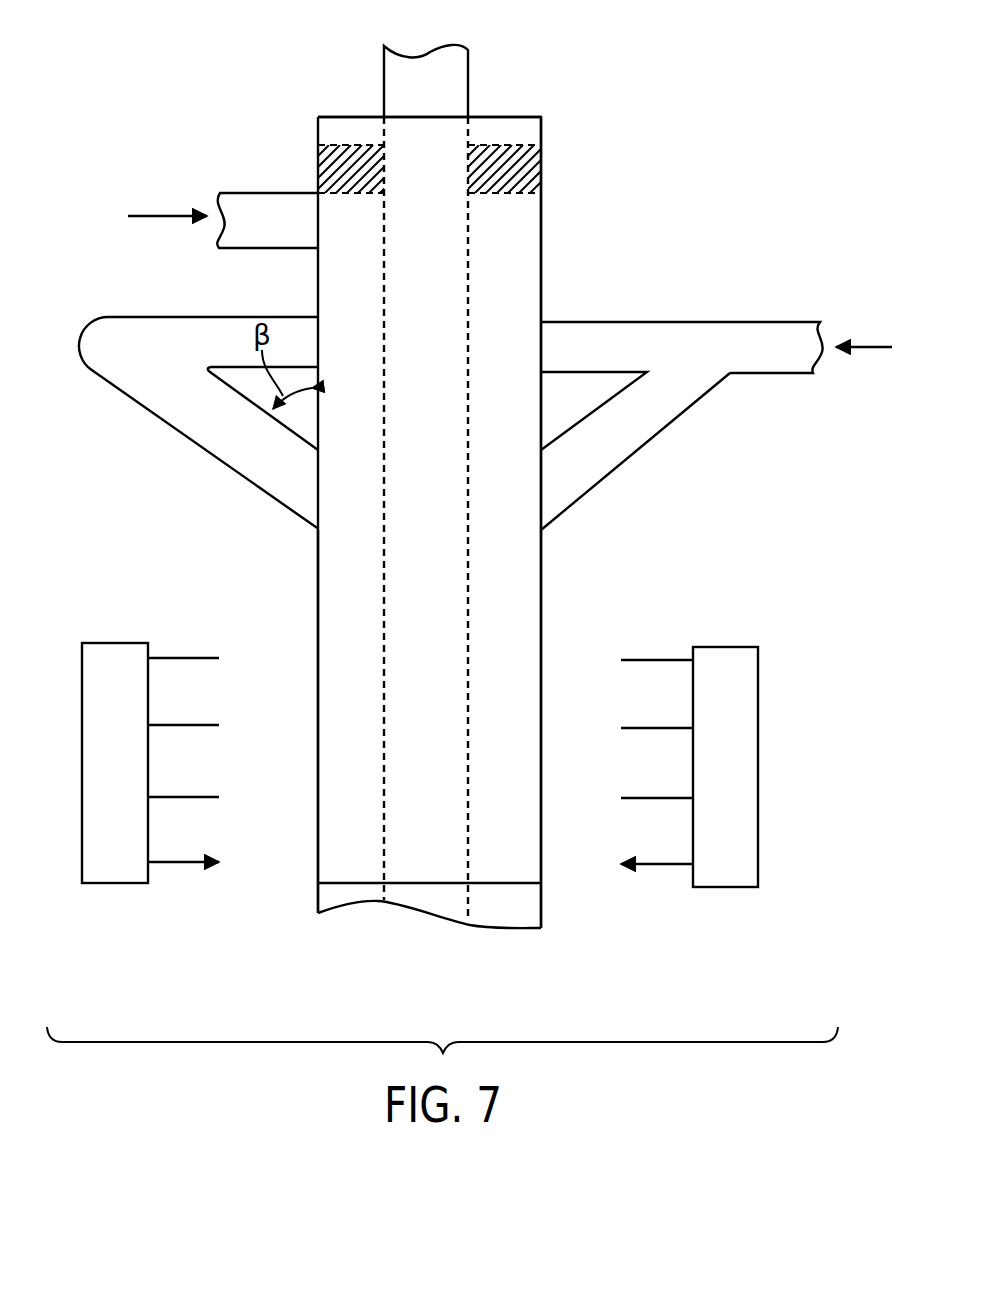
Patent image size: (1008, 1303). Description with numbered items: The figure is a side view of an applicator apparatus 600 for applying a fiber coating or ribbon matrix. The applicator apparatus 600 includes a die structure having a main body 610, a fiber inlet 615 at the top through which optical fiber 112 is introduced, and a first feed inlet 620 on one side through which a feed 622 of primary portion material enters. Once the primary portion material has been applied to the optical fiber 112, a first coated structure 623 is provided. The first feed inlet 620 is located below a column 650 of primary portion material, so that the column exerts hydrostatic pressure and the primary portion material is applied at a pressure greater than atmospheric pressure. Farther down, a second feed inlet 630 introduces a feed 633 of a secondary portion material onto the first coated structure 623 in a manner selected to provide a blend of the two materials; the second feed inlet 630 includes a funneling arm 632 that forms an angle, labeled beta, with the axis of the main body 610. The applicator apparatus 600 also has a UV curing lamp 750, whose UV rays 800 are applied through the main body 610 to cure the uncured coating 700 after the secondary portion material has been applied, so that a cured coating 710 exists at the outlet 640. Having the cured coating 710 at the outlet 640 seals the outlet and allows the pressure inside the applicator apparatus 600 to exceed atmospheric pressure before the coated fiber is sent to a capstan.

The optical fiber 112 is at (470, 60).
The applicator apparatus 600 is at (552, 957).
The main body 610 is at (370, 293).
The fiber inlet 615 is at (527, 117).
The first feed inlet 620 is at (262, 249).
The feed of primary portion material 622 is at (153, 219).
The first coated structure 623 is at (542, 266).
The second feed inlet 630 is at (780, 322).
The funneling arm 632 is at (215, 462).
The feed of secondary portion material 633 is at (866, 351).
The outlet 640 is at (481, 883).
The column of primary portion material 650 is at (353, 147).
The uncured coating 700 is at (318, 598).
The cured coating 710 is at (318, 900).
The UV curing lamp 750 is at (752, 757).
The UV rays 800 is at (182, 658).